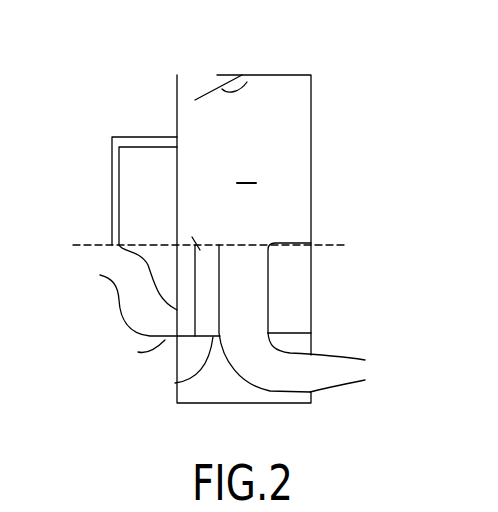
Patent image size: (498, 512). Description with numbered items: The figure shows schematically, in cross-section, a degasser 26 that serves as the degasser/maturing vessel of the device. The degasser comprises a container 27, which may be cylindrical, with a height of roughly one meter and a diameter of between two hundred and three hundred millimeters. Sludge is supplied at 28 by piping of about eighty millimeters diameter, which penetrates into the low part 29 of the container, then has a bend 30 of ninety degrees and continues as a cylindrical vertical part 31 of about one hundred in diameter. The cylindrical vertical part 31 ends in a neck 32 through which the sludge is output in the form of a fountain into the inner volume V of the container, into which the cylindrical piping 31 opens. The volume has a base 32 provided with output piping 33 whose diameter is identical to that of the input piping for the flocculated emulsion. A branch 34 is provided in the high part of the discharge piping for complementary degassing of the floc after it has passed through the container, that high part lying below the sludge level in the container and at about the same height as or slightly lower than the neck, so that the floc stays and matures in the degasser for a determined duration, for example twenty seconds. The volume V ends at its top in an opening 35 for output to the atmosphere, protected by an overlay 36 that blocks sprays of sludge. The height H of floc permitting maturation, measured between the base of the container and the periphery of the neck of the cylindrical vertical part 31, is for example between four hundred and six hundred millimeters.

The degasser 26 is at (407, 106).
The container 27 is at (311, 155).
The sludge supply piping 28 is at (364, 369).
The low part of the container 29 is at (312, 340).
The bend 30 is at (232, 377).
The cylindrical vertical part 31 is at (272, 282).
The neck 32 is at (274, 241).
The output piping 33 is at (115, 298).
The branch 34 is at (110, 174).
The opening 35 is at (193, 84).
The overlay 36 is at (247, 82).